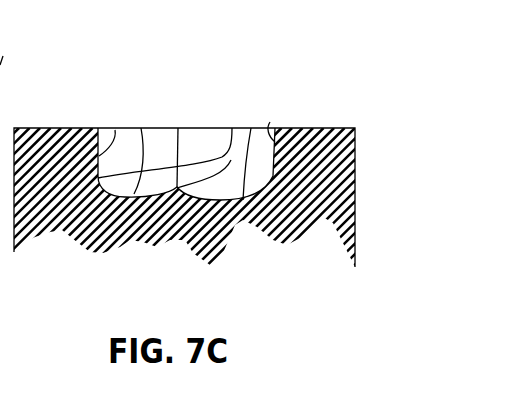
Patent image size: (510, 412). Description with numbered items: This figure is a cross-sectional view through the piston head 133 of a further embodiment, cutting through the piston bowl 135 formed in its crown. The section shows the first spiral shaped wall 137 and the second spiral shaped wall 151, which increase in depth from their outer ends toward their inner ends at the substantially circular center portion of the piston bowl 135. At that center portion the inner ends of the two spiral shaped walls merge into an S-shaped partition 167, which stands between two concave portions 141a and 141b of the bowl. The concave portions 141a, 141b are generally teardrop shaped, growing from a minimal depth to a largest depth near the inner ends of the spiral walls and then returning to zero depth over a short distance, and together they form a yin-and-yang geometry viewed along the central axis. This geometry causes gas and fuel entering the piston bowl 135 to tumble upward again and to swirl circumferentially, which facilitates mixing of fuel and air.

The piston head 133 is at (316, 64).
The piston bowl 135 is at (165, 124).
The first spiral shaped wall 137 is at (270, 122).
The first concave portion 141a is at (251, 128).
The second concave portion 141b is at (141, 128).
The second spiral shaped wall 151 is at (115, 130).
The S-shaped partition 167 is at (178, 128).